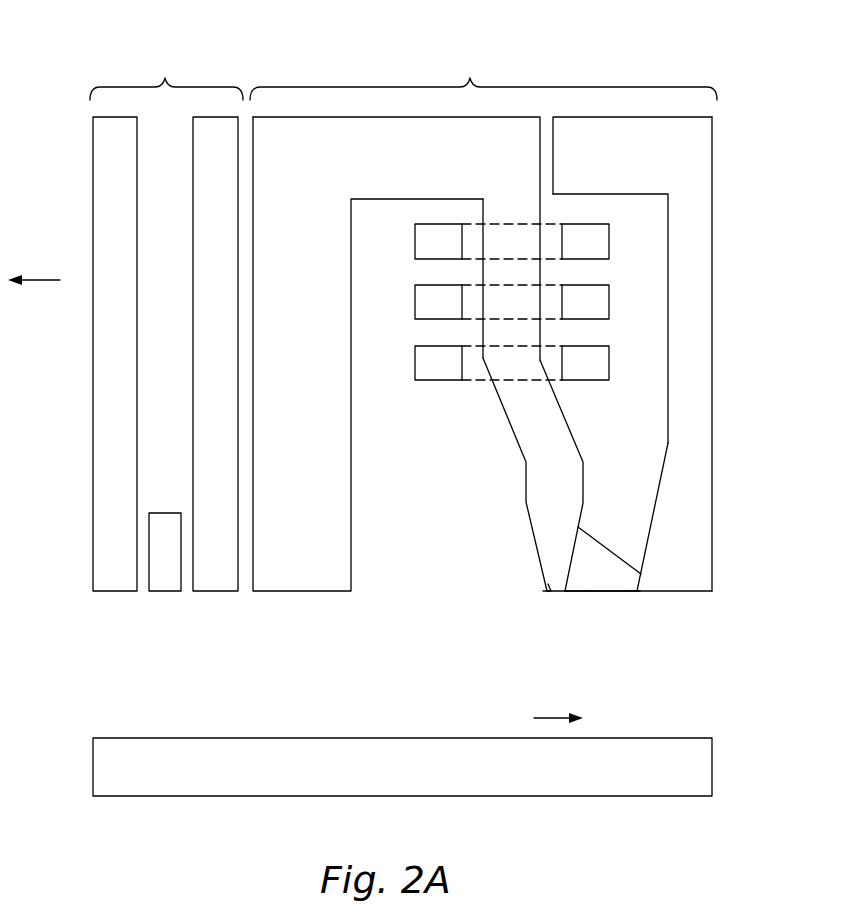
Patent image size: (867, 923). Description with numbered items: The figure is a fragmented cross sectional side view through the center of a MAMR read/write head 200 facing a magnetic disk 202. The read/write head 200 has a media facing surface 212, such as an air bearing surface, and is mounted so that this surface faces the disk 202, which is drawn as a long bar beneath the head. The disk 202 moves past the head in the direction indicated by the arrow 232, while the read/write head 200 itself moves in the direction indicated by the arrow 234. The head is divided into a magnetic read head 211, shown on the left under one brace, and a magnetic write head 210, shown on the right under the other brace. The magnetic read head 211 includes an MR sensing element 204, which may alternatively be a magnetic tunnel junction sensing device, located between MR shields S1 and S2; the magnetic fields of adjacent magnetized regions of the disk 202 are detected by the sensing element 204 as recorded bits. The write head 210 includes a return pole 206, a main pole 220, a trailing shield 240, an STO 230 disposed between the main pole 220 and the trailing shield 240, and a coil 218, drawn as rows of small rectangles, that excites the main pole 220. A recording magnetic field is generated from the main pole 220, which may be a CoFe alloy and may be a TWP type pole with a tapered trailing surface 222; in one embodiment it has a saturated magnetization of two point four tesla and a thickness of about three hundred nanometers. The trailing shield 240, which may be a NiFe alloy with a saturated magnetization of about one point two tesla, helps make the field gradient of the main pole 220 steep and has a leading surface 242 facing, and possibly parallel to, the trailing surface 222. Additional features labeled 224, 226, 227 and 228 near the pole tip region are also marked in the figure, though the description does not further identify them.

The MAMR read/write head 200 is at (86, 45).
The magnetic disk 202 is at (713, 760).
The MR sensing element 204 is at (158, 592).
The return pole 206 is at (278, 592).
The magnetic write head 210 is at (511, 350).
The magnetic read head 211 is at (166, 77).
The media facing surface 212 is at (557, 593).
The coil 218 is at (440, 381).
The main pole 220 is at (536, 545).
The tapered trailing surface 222 is at (583, 513).
The gap portion 224 is at (578, 593).
The connecting line 226 is at (614, 552).
The finger tip corner 227 is at (548, 582).
The gap edge 228 is at (631, 586).
The STO 230 is at (600, 577).
The arrow 232 is at (549, 716).
The arrow 234 is at (43, 277).
The trailing shield 240 is at (713, 561).
The leading surface 242 is at (653, 517).
The MR shield S1 is at (113, 592).
The MR shield S2 is at (200, 592).